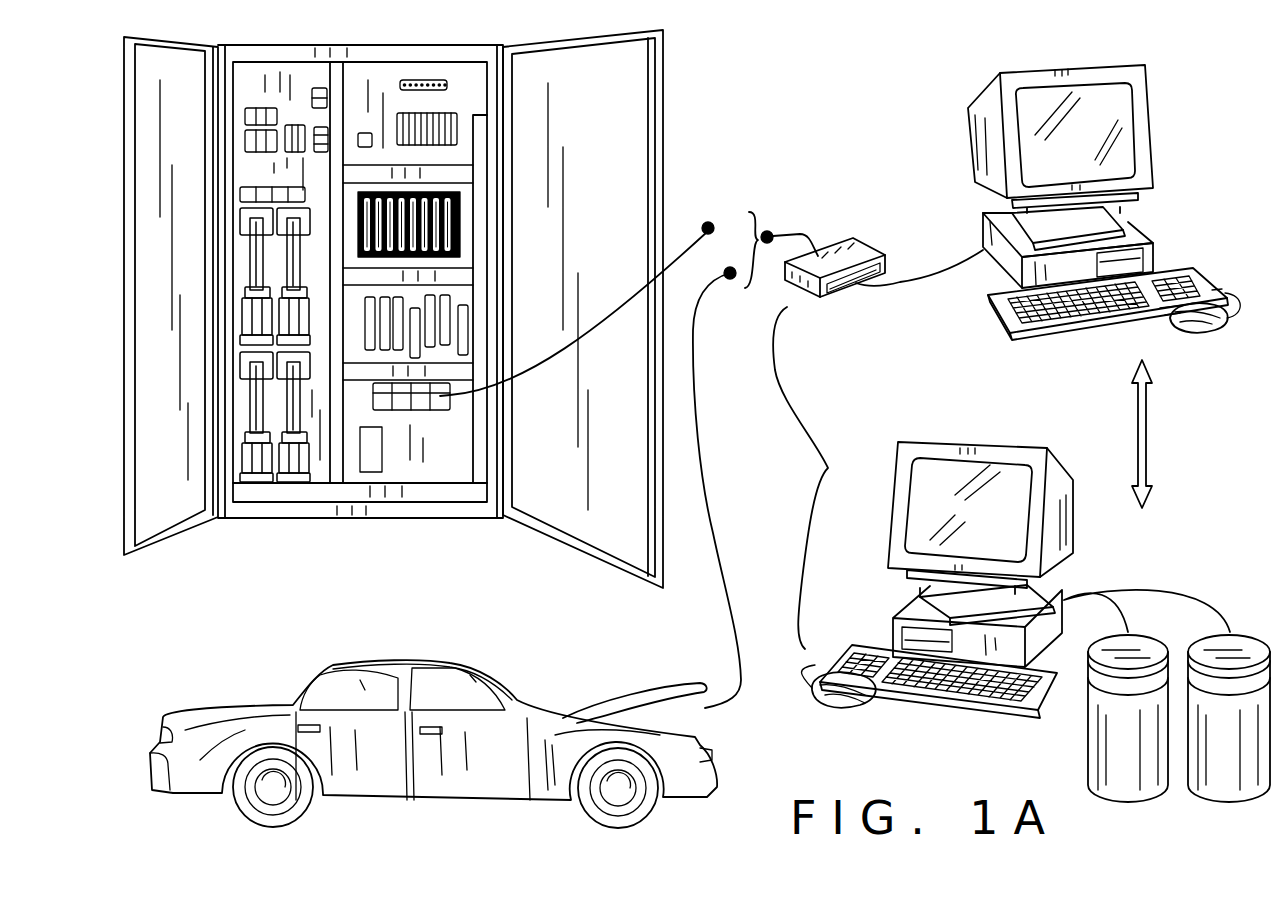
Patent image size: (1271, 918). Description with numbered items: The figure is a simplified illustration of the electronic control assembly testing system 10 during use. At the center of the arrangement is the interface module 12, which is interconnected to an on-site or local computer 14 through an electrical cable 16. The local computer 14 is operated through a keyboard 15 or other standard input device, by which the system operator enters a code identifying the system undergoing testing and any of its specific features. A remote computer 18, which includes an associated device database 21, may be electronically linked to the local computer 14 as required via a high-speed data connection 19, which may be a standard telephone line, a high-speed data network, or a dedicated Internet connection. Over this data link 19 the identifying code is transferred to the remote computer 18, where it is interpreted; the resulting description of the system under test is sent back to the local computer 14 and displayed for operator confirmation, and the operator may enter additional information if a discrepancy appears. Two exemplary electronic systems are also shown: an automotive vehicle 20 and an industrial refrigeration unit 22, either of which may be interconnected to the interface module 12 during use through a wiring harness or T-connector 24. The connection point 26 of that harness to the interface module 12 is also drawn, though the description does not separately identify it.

The electronic control assembly testing system 10 is at (795, 478).
The interface module 12 is at (838, 313).
The local computer 14 is at (1178, 152).
The keyboard 15 is at (1193, 268).
The electrical cable 16 is at (925, 278).
The remote computer 18 is at (1106, 562).
The high-speed data connection 19 is at (1150, 450).
The automotive vehicle 20 is at (449, 820).
The device database 21 is at (1235, 805).
The industrial refrigeration unit 22 is at (341, 540).
The T-connector 24 is at (788, 229).
The connector 26 is at (846, 235).